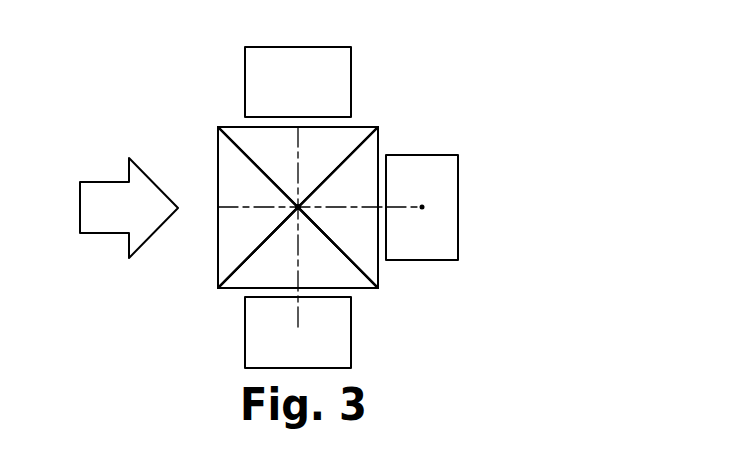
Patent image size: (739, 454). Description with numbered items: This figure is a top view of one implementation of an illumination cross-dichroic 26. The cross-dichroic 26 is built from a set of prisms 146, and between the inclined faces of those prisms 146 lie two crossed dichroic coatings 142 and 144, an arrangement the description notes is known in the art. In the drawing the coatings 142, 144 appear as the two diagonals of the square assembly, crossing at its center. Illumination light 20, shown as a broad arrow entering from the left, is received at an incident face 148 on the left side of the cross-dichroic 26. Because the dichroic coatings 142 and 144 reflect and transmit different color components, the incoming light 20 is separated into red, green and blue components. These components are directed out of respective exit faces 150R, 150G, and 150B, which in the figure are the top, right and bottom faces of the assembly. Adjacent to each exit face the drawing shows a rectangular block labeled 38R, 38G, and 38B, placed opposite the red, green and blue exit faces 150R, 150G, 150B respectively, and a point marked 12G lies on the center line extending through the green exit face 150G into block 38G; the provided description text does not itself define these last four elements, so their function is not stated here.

The illumination light 20 is at (110, 182).
The illumination cross-dichroic 26 is at (212, 140).
The incident face 148 is at (217, 225).
The dichroic coating 142 is at (222, 268).
The dichroic coating 144 is at (360, 272).
The prisms 146 is at (348, 153).
The exit face 150R is at (232, 127).
The exit face 150G is at (403, 118).
The exit face 150B is at (362, 288).
The red light valve 38R is at (352, 62).
The green light valve 38G is at (458, 225).
The blue light valve 38B is at (245, 328).
The green image point 12G is at (395, 207).